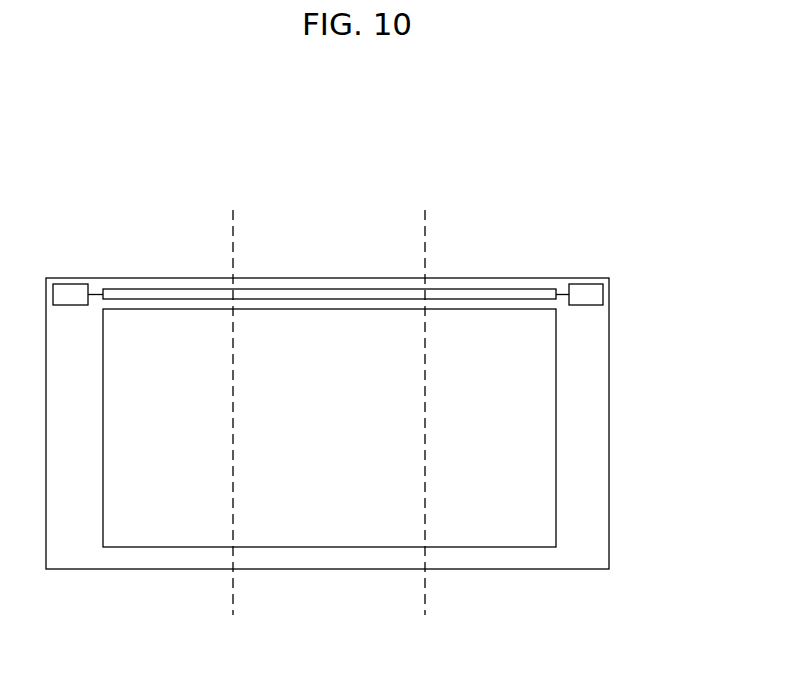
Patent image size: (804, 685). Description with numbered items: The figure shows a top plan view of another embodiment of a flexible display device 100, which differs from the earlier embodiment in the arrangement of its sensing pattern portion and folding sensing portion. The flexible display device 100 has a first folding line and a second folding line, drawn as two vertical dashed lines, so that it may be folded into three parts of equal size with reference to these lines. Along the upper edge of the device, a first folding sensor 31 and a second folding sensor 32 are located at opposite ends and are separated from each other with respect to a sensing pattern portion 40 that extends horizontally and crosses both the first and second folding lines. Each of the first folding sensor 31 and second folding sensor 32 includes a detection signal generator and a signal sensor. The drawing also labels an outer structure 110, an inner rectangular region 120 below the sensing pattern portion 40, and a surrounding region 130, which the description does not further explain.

The flexible display device 100 is at (548, 261).
The housing 110 is at (163, 571).
The display panel 120 is at (327, 547).
The frame 130 is at (595, 487).
The sensing pattern portion 40 is at (325, 295).
The first folding sensor 31 is at (590, 293).
The second folding sensor 32 is at (70, 295).